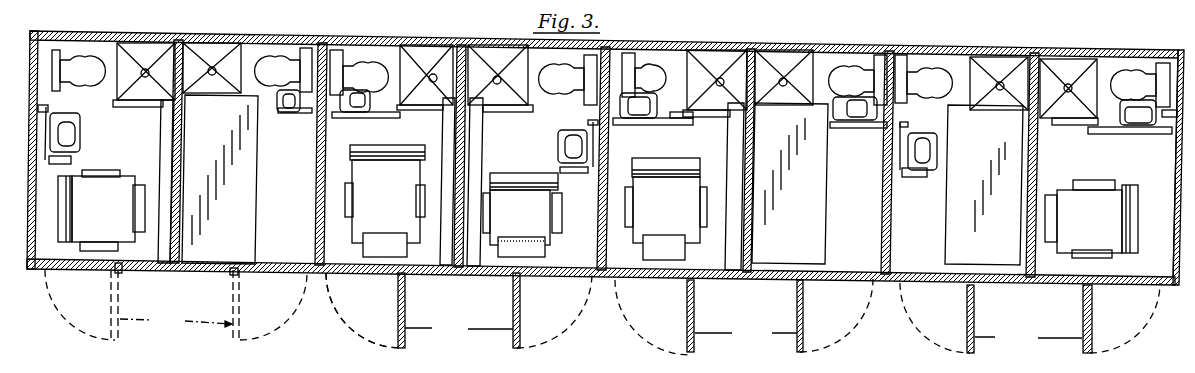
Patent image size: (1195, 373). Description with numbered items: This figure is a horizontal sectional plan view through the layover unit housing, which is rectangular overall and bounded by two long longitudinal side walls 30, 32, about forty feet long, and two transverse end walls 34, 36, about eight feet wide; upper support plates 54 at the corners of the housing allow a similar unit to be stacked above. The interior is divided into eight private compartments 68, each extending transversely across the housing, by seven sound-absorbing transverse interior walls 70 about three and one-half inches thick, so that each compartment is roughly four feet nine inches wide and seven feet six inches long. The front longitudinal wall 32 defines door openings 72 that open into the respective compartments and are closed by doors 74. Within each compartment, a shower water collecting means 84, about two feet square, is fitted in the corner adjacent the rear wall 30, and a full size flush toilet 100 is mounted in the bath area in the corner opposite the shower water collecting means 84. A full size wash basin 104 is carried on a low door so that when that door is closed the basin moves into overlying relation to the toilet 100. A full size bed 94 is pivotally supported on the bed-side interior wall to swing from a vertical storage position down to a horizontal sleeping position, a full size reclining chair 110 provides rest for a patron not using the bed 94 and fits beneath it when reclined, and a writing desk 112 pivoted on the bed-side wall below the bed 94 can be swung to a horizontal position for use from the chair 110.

The longitudinal side wall 30 is at (380, 38).
The longitudinal side wall 32 is at (423, 273).
The transverse end wall 34 is at (30, 60).
The transverse end wall 36 is at (1175, 152).
The upper support plate 54 is at (1161, 52).
The private compartment 68 is at (105, 50).
The transverse interior wall 70 is at (174, 137).
The door opening 72 is at (355, 274).
The door 74 is at (601, 329).
The shower water collecting means 84 is at (167, 36).
The bed 94 is at (813, 178).
The flush toilet 100 is at (80, 78).
The wash basin 104 is at (68, 133).
The reclining chair 110 is at (103, 178).
The writing desk 112 is at (1070, 238).